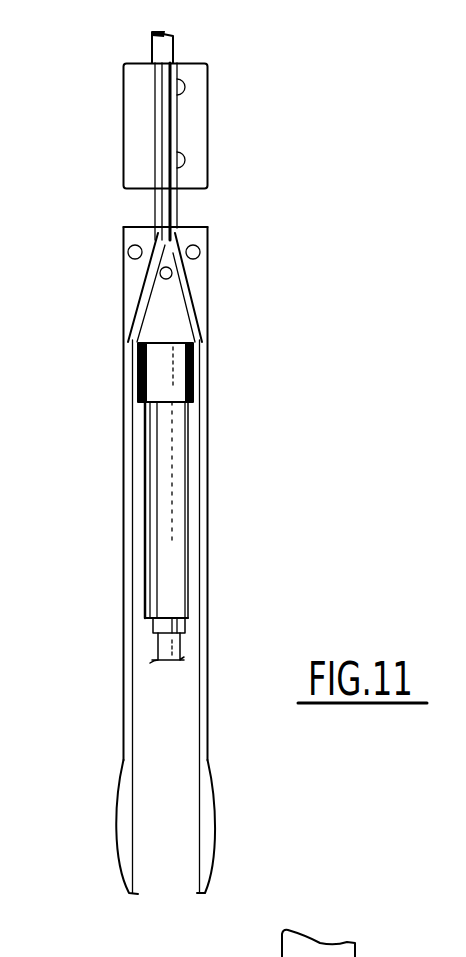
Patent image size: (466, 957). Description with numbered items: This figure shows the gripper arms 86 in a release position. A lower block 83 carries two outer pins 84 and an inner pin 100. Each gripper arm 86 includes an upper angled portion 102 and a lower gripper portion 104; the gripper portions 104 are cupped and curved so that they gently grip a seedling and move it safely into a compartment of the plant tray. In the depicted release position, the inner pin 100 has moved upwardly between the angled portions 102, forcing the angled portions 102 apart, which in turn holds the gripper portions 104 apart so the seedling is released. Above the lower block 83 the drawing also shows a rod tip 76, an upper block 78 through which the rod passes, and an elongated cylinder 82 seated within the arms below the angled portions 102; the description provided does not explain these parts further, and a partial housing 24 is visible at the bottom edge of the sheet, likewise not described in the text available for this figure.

The rod tip 76 is at (173, 45).
The block 78 is at (210, 132).
The cylinder 82 is at (180, 473).
The lower block 83 is at (199, 287).
The outer pins 84 is at (141, 246).
The gripper arms 86 is at (197, 705).
The inner pin 100 is at (161, 279).
The upper angled portions 102 is at (200, 325).
The lower gripper portions 104 is at (217, 823).
The housing 24 is at (367, 956).